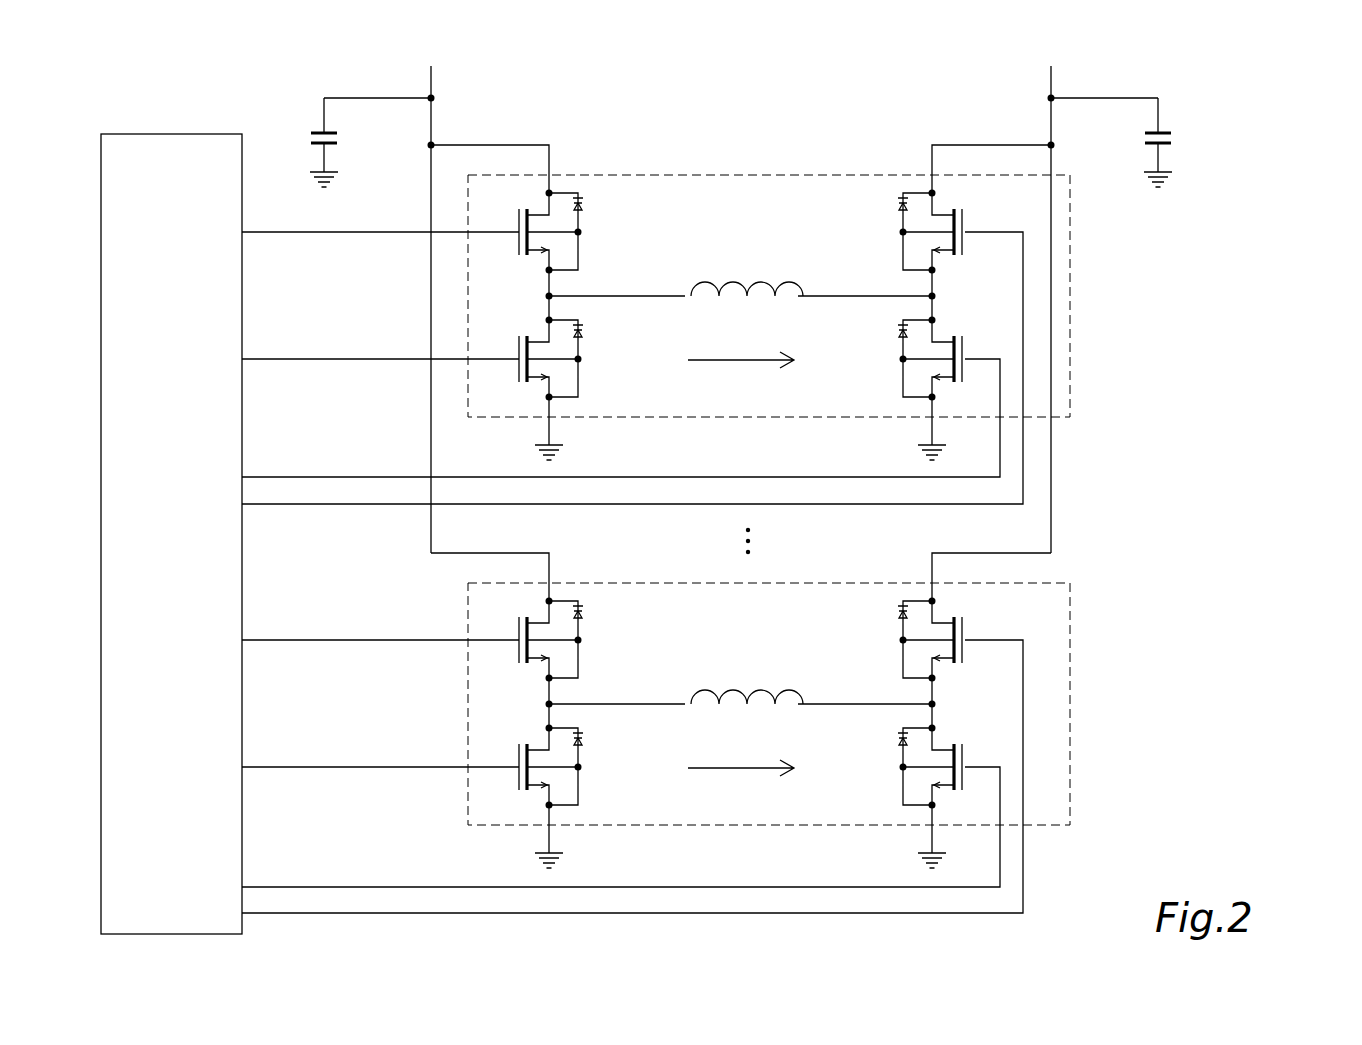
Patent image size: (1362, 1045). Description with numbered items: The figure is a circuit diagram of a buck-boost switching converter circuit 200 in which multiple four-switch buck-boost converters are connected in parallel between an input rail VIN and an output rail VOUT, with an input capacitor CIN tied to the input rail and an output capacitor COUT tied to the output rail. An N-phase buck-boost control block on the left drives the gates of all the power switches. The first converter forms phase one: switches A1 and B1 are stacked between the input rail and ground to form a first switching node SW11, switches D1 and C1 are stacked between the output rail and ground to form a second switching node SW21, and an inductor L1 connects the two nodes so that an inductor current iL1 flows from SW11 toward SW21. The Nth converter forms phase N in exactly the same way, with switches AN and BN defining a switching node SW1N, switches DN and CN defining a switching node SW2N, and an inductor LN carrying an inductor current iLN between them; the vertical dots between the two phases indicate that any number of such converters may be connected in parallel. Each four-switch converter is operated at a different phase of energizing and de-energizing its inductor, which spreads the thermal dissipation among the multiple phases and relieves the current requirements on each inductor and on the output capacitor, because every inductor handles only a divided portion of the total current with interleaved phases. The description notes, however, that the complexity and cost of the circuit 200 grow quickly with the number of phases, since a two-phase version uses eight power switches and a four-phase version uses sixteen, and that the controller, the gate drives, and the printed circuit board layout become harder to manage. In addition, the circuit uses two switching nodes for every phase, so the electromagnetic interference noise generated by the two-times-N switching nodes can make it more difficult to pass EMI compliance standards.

The buck-boost switching converter circuit 200 is at (1253, 77).
The input voltage rail VIN is at (386, 294).
The output voltage rail VOUT is at (1097, 294).
The input capacitor CIN is at (309, 142).
The output capacitor COUT is at (1185, 142).
The phase 1 switch A A1 is at (535, 232).
The phase 1 switch B B1 is at (535, 359).
The phase 1 switch C C1 is at (950, 359).
The phase 1 switch D D1 is at (951, 232).
The phase 1 switch node 1 SW11 is at (585, 295).
The phase 1 switch node 2 SW21 is at (895, 295).
The inductor L1 is at (747, 273).
The phase 1 inductor current iL1 is at (741, 347).
The phase N switch A AN is at (535, 640).
The phase N switch B BN is at (535, 767).
The phase N switch C CN is at (951, 767).
The phase N switch D DN is at (951, 640).
The phase N switch node 1 SW1N is at (585, 703).
The phase N switch node 2 SW2N is at (897, 703).
The inductor LN is at (747, 681).
The phase N inductor current iLN is at (741, 755).